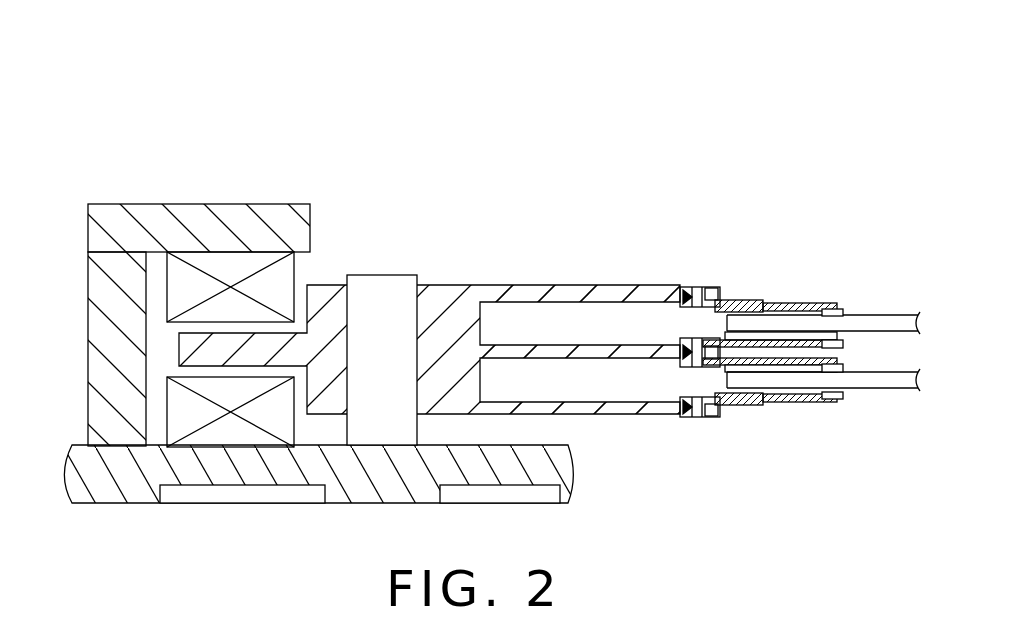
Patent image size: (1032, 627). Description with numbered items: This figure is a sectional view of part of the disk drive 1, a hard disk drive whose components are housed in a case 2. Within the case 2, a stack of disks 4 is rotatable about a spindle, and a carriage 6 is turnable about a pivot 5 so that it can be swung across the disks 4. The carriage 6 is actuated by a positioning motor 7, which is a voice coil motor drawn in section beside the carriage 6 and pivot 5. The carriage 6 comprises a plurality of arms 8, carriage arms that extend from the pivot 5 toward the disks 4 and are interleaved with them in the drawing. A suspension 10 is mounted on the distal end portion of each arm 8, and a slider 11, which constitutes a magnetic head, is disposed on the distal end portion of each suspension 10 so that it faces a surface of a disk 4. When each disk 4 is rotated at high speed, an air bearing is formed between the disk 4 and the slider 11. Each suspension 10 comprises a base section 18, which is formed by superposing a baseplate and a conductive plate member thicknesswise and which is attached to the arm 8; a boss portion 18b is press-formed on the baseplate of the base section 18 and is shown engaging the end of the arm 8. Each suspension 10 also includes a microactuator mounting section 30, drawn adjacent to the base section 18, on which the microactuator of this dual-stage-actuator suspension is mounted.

The disk drive 1 is at (248, 158).
The case 2 is at (128, 505).
The disk 4 is at (900, 318).
The pivot 5 is at (383, 284).
The carriage 6 is at (536, 278).
The positioning motor 7 is at (228, 433).
The arm 8 is at (625, 285).
The suspension 10 is at (806, 336).
The slider 11 is at (848, 311).
The base section 18 is at (731, 289).
The boss portion 18b is at (690, 287).
The microactuator mounting section 30 is at (753, 301).